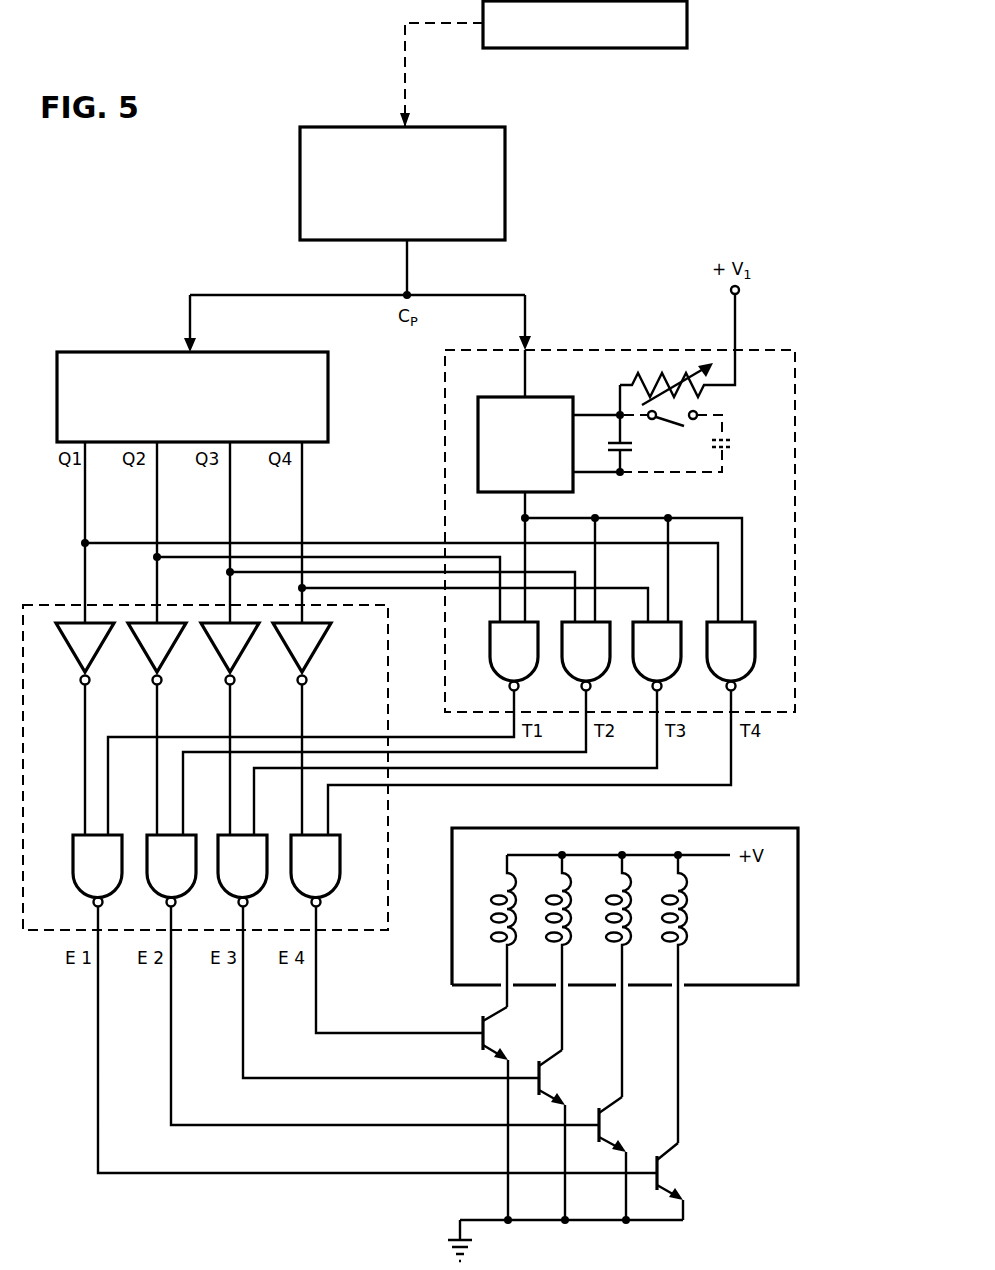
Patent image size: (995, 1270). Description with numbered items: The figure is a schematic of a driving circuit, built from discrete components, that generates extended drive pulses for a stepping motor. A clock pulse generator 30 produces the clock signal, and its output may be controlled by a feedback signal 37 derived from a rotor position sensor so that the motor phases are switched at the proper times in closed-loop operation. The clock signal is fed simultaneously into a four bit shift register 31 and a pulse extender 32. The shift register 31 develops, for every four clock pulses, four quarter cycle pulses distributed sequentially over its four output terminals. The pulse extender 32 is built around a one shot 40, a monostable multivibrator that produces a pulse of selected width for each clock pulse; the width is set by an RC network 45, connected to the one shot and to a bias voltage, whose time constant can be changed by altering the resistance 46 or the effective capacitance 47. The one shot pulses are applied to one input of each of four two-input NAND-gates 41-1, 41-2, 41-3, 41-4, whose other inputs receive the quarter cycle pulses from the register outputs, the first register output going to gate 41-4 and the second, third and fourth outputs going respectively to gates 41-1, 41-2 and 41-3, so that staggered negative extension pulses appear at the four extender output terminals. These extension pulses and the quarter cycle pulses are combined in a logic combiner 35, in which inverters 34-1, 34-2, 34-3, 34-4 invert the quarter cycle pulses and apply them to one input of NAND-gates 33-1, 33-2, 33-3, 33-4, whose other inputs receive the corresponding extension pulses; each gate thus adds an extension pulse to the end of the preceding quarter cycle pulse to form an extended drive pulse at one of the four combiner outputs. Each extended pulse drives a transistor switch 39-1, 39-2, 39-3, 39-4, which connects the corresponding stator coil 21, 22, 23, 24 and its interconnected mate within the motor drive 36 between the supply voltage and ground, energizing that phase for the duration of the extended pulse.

The feedback signal 37 is at (657, 48).
The clock pulse generator 30 is at (505, 183).
The 4 bit shift register 31 is at (68, 352).
The pulse extender 32 is at (778, 350).
The one shot 40 is at (557, 397).
The RC network 45 is at (740, 412).
The resistance 46 is at (667, 385).
The capacitance 47 is at (683, 448).
The NAND-gate 41-1 is at (505, 676).
The NAND-gate 41-2 is at (580, 676).
The NAND-gate 41-3 is at (652, 676).
The NAND-gate 41-4 is at (726, 676).
The logic combiner 35 is at (50, 603).
The inverter 34-1 is at (73, 668).
The inverter 34-2 is at (145, 668).
The inverter 34-3 is at (218, 668).
The inverter 34-4 is at (290, 668).
The NAND-gate 33-1 is at (92, 892).
The NAND-gate 33-2 is at (166, 892).
The NAND-gate 33-3 is at (238, 892).
The NAND-gate 33-4 is at (311, 892).
The motor drive 36 is at (758, 828).
The stator coil 21 is at (686, 950).
The stator coil 22 is at (614, 893).
The stator coil 23 is at (557, 893).
The stator coil 24 is at (505, 935).
The transistor switch 39-1 is at (688, 1181).
The transistor switch 39-2 is at (629, 1158).
The transistor switch 39-3 is at (568, 1135).
The transistor switch 39-4 is at (511, 1113).